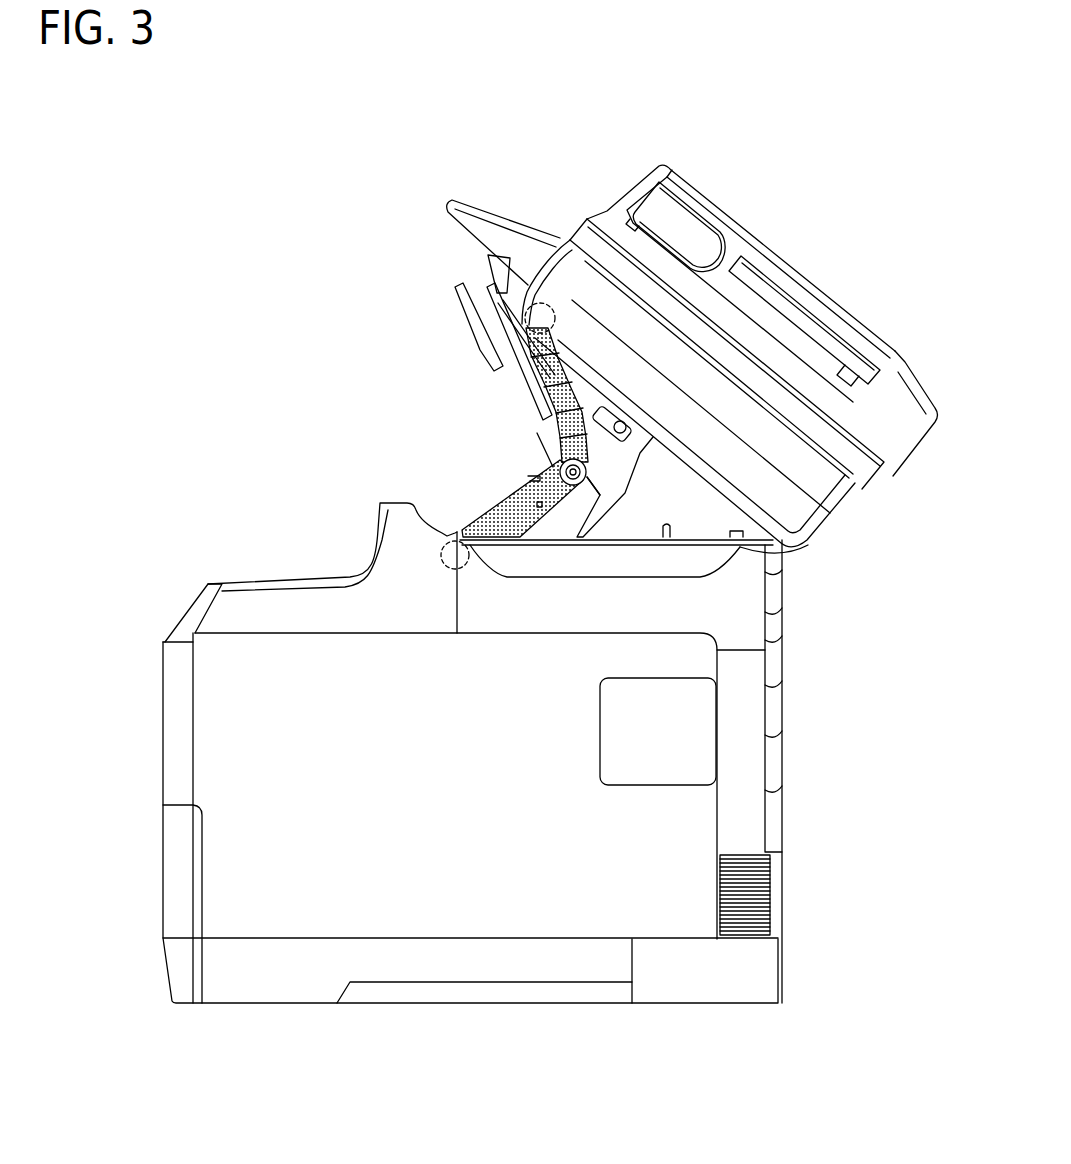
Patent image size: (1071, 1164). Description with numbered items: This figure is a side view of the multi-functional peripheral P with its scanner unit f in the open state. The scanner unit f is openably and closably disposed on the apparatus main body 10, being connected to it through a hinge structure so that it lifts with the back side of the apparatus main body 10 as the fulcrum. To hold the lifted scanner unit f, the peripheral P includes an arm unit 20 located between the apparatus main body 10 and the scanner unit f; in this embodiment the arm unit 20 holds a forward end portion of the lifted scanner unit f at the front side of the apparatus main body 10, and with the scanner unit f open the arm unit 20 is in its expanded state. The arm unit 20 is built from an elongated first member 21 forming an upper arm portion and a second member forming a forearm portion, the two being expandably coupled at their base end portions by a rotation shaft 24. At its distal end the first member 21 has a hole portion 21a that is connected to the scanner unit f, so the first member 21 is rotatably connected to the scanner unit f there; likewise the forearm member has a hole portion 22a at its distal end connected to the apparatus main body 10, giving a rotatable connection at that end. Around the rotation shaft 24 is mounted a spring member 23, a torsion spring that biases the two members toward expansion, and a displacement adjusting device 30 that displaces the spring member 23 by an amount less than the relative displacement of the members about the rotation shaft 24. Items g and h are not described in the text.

The multi-functional peripheral P is at (236, 260).
The apparatus main body 10 is at (216, 581).
The arm unit 20 is at (542, 430).
The first member 21 is at (527, 381).
The hole portion 21a is at (526, 316).
The hole portion 22a is at (452, 543).
The spring member 23 is at (588, 440).
The rotation shaft 24 is at (588, 474).
The displacement adjusting device 30 is at (531, 468).
The paper guide g is at (485, 200).
The lid cover h is at (783, 258).
The scanner unit f is at (725, 360).